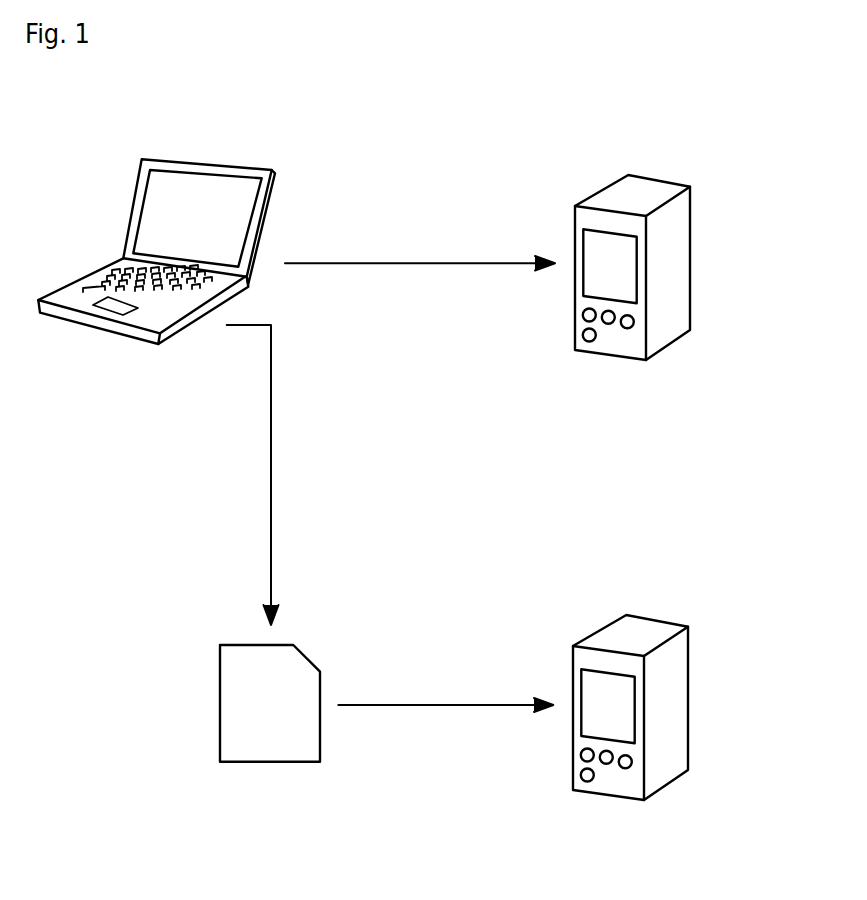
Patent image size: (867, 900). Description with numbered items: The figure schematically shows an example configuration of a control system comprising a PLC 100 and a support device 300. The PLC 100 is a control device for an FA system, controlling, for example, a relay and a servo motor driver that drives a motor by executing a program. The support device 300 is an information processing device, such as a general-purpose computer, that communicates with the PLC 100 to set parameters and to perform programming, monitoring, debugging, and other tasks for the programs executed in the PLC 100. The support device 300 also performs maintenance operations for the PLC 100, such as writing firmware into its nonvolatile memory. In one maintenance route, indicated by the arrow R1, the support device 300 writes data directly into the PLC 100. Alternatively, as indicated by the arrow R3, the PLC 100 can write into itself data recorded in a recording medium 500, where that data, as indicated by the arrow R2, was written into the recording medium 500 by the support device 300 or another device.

The PLC 100 is at (652, 178).
The support device 300 is at (240, 167).
The recording medium 500 is at (220, 702).
The arrow R1 is at (500, 267).
The arrow R2 is at (273, 472).
The arrow R3 is at (500, 708).